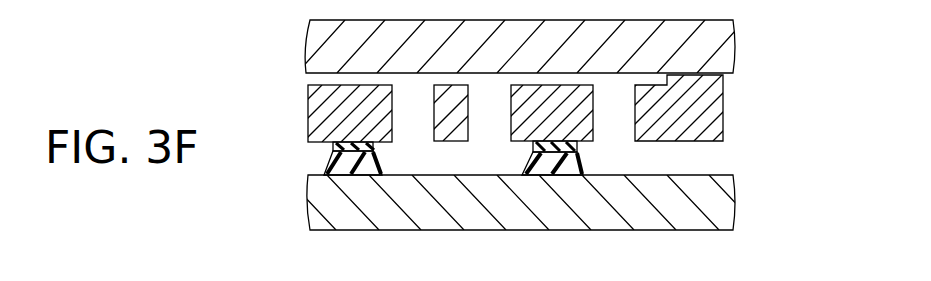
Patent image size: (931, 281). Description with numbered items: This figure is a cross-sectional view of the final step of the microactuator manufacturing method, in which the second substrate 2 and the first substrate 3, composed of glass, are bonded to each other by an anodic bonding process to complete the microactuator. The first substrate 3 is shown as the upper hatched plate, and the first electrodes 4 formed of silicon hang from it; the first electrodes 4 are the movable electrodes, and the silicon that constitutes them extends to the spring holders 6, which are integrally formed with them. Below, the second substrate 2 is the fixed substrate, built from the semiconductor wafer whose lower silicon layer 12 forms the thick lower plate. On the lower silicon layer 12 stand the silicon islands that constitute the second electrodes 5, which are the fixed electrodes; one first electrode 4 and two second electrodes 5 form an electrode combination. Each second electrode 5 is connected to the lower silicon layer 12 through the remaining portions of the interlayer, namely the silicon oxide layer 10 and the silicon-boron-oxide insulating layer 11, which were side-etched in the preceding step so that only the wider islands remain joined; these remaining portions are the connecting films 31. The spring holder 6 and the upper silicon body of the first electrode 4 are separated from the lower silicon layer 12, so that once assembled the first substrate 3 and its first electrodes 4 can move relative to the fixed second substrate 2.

The second substrate 2 is at (560, 181).
The first substrate 3 is at (703, 50).
The first electrode 4 is at (697, 98).
The second electrode 5 is at (322, 112).
The spring holder 6 is at (453, 103).
The silicon oxide layer 10 is at (565, 147).
The silicon-boron-oxide insulating layer 11 is at (568, 168).
The lower silicon layer 12 is at (543, 202).
The connecting film 31 is at (312, 155).